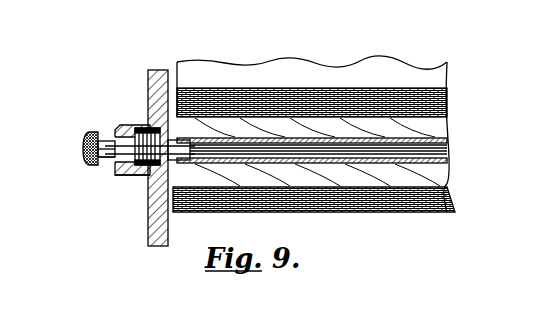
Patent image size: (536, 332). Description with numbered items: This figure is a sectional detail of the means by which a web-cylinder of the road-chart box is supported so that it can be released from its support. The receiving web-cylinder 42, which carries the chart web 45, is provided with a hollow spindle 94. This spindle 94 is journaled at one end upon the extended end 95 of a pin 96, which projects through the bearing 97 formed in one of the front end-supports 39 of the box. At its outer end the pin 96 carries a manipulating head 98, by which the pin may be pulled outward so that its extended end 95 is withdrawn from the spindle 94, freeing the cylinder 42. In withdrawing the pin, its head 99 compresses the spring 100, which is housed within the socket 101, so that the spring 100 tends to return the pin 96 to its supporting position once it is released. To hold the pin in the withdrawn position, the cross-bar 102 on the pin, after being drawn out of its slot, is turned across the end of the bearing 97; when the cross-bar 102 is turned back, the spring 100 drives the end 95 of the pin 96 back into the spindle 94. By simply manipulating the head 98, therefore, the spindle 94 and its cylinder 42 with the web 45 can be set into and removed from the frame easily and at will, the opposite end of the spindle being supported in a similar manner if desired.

The front end-support 39 is at (157, 78).
The receiving web-cylinder 42 is at (440, 127).
The web 45 is at (426, 196).
The hollow spindle 94 is at (440, 150).
The extended end of pin 95 is at (156, 173).
The pin 96 is at (112, 160).
The bearing 97 is at (120, 126).
The manipulating head 98 is at (83, 146).
The pin head 99 is at (172, 137).
The spring 100 is at (128, 162).
The socket 101 is at (146, 133).
The cross-bar 102 is at (112, 139).